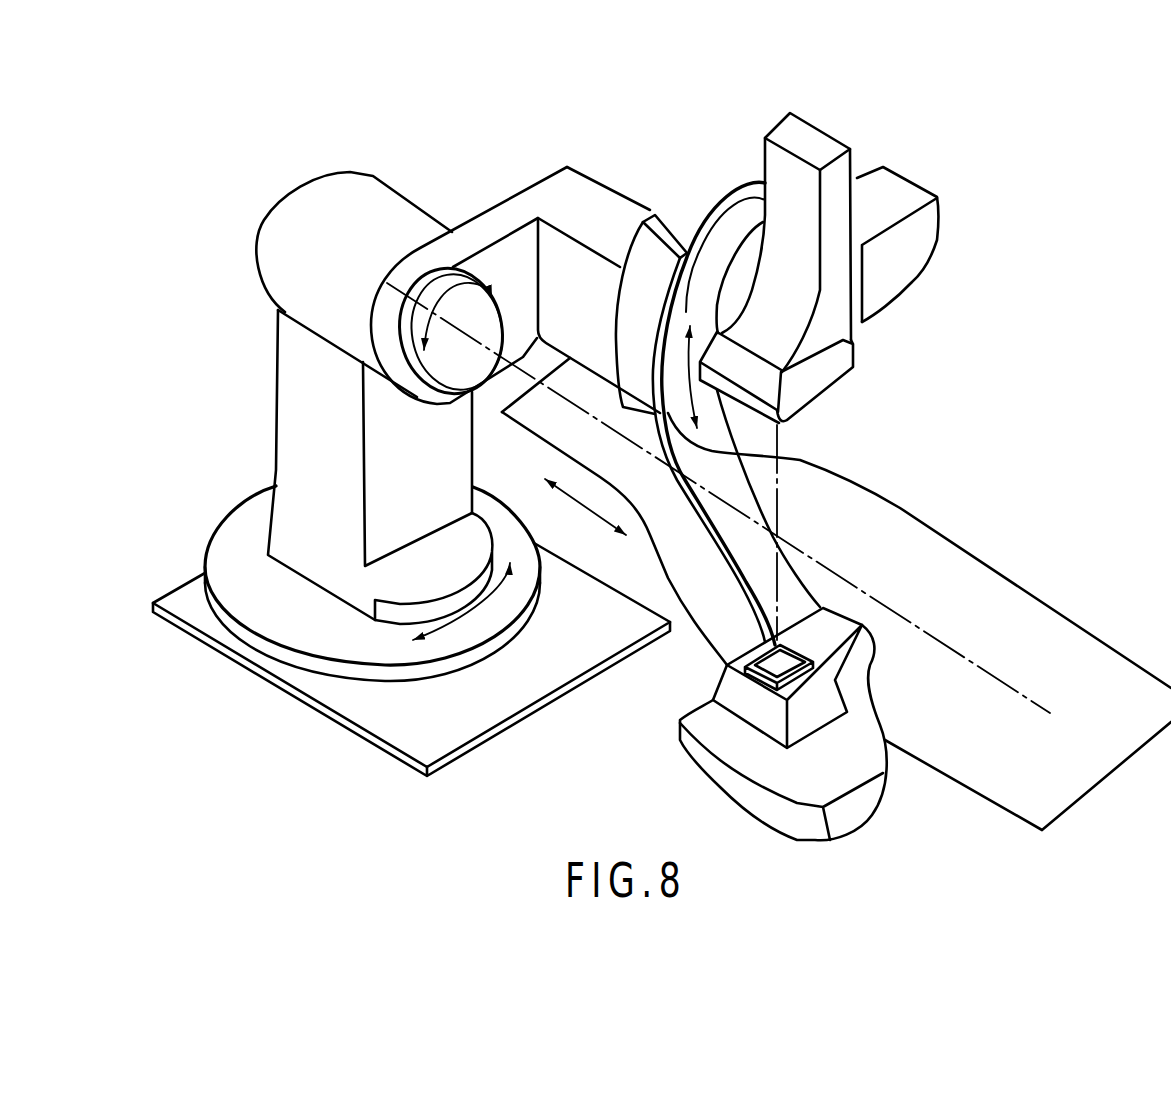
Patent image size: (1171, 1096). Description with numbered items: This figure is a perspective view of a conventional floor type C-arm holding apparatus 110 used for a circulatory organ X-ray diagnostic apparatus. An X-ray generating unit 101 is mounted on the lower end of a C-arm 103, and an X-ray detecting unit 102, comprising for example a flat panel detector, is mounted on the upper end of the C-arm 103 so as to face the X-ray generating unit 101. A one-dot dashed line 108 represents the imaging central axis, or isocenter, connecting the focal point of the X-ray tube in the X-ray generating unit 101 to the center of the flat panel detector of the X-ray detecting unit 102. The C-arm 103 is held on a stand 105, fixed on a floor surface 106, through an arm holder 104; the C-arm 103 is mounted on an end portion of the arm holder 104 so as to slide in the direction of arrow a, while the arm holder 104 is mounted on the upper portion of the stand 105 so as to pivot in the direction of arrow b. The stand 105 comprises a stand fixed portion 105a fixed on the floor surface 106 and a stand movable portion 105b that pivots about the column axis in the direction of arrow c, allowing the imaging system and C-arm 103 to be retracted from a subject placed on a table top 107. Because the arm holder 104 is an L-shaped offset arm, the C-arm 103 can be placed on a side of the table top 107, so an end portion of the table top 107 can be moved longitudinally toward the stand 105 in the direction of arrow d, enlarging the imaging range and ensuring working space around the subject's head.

The X-ray generating unit 101 is at (725, 718).
The X-ray detecting unit 102 is at (857, 368).
The C-arm 103 is at (732, 187).
The arm holder 104 is at (525, 195).
The stand 105 is at (227, 366).
The stand fixed portion 105a is at (216, 538).
The stand movable portion 105b is at (285, 424).
The floor surface 106 is at (388, 730).
The table top 107 is at (963, 556).
The one-dot dashed line 108 is at (770, 528).
The C-arm holding apparatus 110 is at (573, 134).